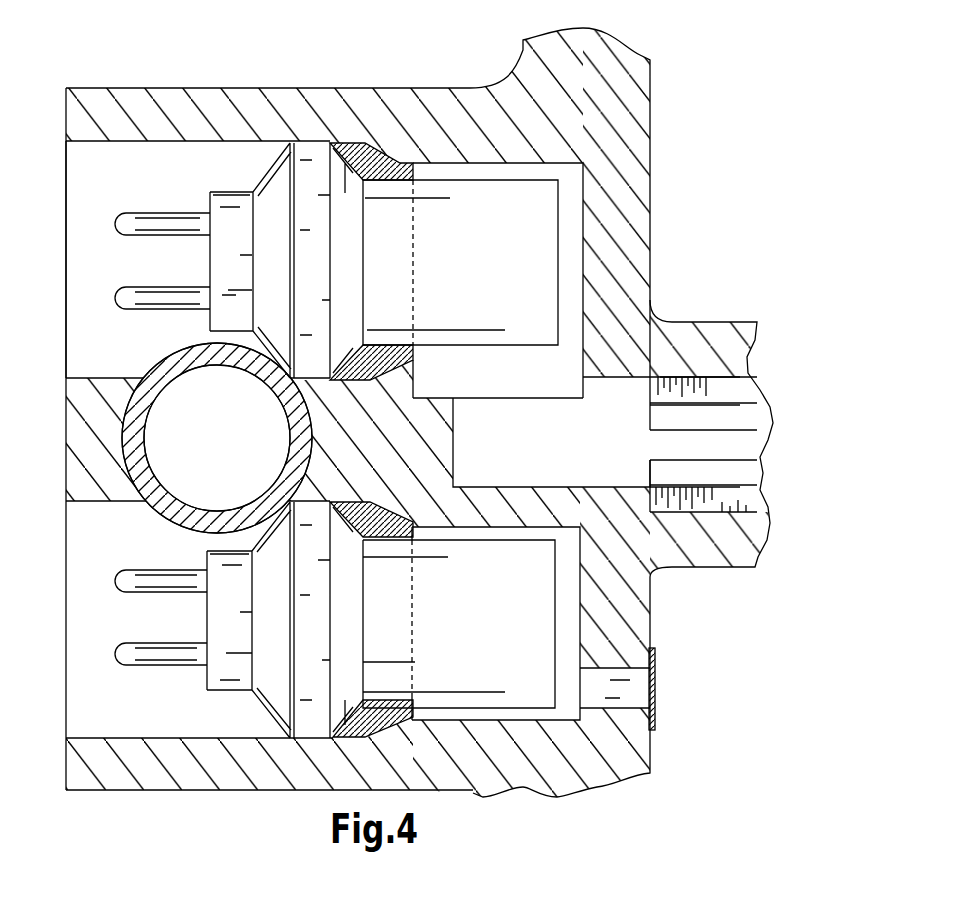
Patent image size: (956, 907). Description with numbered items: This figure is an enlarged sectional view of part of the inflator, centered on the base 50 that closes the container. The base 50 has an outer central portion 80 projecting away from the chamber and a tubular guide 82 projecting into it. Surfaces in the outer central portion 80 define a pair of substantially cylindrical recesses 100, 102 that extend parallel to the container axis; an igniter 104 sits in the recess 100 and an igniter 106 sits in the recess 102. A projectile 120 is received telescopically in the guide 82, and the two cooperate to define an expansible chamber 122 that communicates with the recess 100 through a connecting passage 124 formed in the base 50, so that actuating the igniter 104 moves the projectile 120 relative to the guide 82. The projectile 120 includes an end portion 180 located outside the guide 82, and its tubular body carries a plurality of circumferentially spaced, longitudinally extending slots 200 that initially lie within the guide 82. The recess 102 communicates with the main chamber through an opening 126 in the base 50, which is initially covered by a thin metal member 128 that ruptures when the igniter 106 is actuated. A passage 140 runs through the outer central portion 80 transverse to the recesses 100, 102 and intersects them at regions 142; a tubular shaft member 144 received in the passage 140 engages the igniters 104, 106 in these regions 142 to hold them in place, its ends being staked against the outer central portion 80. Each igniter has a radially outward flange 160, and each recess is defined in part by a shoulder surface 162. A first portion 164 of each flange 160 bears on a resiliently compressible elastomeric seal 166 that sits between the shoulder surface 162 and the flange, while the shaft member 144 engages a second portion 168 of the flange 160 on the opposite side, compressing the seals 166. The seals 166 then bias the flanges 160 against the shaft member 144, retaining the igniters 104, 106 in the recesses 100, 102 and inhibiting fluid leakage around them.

The base 50 is at (533, 50).
The outer central portion 80 is at (130, 88).
The tubular guide 82 is at (723, 333).
The recess 100 is at (218, 141).
The recess 102 is at (189, 733).
The igniter 104 is at (530, 248).
The igniter 106 is at (535, 628).
The projectile 120 is at (772, 388).
The expansible chamber 122 is at (554, 462).
The connecting passage 124 is at (533, 398).
The opening 126 is at (620, 708).
The thin metal member 128 is at (652, 673).
The passage 140 is at (126, 412).
The regions 142 is at (263, 387).
The shaft member 144 is at (163, 507).
The igniter flange 160 is at (313, 157).
The shoulder surface 162 is at (398, 163).
The first portion of igniter flange 164 is at (345, 193).
The seal 166 is at (410, 185).
The second portion of flange 168 is at (277, 210).
The end portion 180 is at (717, 373).
The longitudinally extending slots 200 is at (728, 502).